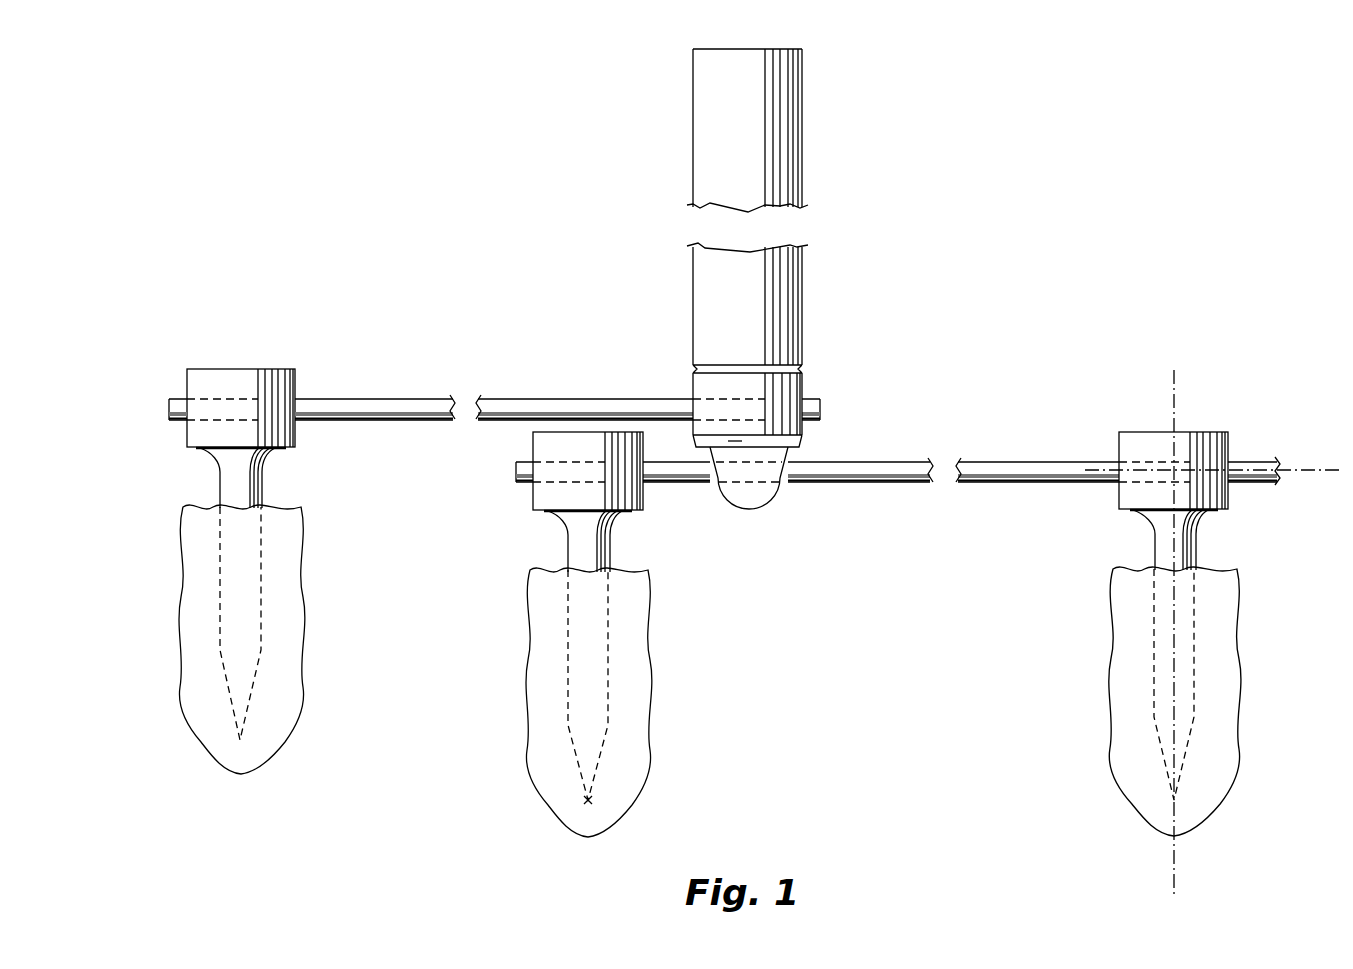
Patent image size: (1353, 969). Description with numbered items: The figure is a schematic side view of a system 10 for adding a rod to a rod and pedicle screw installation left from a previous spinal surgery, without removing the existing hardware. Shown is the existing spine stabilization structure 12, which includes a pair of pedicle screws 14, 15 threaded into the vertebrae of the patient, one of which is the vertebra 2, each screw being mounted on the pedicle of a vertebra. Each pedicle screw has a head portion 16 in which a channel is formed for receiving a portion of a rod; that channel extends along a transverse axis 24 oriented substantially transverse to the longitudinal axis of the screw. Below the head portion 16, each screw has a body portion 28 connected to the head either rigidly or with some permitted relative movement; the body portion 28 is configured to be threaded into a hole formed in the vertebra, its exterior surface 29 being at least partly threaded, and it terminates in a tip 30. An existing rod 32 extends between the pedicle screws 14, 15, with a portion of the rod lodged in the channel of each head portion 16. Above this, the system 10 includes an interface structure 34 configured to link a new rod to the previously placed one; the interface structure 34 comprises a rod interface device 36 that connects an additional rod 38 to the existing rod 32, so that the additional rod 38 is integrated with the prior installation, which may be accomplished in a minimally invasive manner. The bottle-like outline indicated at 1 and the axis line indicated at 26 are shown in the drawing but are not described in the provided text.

The bottle 1 is at (622, 692).
The vertebra 2 is at (1138, 720).
The system 10 is at (573, 333).
The existing spine stabilization structure 12 is at (995, 425).
The pedicle screw 14 is at (578, 539).
The pedicle screw 15 is at (1163, 540).
The head portion 16 is at (553, 490).
The transverse axis 24 is at (1305, 470).
The vertical axis 26 is at (1178, 408).
The body portion 28 is at (608, 645).
The exterior surface 29 is at (597, 557).
The tip 30 is at (588, 800).
The existing rod 32 is at (846, 465).
The interface structure 34 is at (818, 370).
The rod interface device 36 is at (705, 388).
The additional rod 38 is at (583, 405).